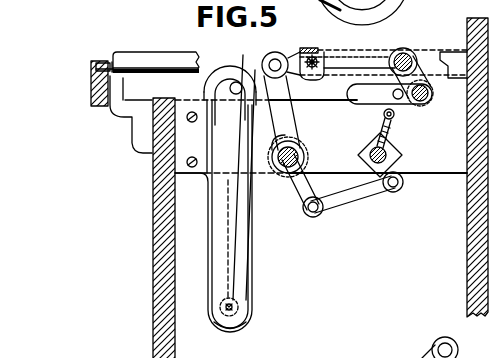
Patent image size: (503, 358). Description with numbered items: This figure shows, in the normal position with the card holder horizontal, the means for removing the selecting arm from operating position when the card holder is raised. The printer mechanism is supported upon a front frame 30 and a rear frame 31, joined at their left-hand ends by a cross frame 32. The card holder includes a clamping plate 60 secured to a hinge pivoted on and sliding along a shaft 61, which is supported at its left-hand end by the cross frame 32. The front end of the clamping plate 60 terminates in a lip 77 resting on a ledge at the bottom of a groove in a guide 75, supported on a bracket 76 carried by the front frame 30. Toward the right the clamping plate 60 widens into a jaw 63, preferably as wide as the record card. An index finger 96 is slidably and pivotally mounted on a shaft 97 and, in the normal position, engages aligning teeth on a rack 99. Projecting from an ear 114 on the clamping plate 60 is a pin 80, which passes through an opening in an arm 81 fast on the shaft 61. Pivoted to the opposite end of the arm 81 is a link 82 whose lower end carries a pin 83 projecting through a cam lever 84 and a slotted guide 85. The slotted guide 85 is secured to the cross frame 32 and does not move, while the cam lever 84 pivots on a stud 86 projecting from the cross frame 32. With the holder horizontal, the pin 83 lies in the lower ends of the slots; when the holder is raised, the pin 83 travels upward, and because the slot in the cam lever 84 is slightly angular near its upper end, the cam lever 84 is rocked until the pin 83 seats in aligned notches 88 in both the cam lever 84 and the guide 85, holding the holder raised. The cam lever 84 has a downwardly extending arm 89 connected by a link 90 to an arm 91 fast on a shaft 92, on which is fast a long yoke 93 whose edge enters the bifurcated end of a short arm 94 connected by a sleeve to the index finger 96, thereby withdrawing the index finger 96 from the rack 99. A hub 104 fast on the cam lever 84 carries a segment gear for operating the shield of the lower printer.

The front frame 30 is at (163, 259).
The rear frame 31 is at (475, 242).
The cross frame 32 is at (446, 160).
The clamping plate 60 is at (330, 50).
The shaft 61 is at (418, 60).
The jaw 63 is at (143, 60).
The guide 75 is at (98, 90).
The bracket 76 is at (140, 126).
The lip 77 is at (104, 64).
The pin 80 is at (307, 72).
The arm 81 is at (401, 48).
The link 82 is at (247, 233).
The pin 83 is at (222, 312).
The cam lever 84 is at (235, 330).
The slotted guide 85 is at (251, 318).
The stud 86 is at (297, 142).
The notches 88 is at (240, 78).
The arm 89 is at (298, 185).
The link 90 is at (360, 197).
The arm 91 is at (397, 170).
The shaft 92 is at (369, 150).
The yoke 93 is at (384, 114).
The arm 94 is at (410, 116).
The index finger 96 is at (444, 78).
The shaft 97 is at (427, 100).
The rack 99 is at (460, 48).
The hub 104 is at (304, 160).
The ear 114 is at (316, 72).